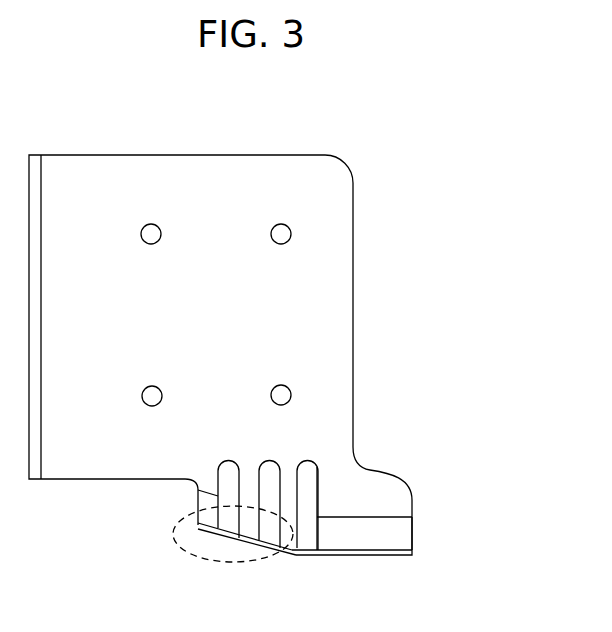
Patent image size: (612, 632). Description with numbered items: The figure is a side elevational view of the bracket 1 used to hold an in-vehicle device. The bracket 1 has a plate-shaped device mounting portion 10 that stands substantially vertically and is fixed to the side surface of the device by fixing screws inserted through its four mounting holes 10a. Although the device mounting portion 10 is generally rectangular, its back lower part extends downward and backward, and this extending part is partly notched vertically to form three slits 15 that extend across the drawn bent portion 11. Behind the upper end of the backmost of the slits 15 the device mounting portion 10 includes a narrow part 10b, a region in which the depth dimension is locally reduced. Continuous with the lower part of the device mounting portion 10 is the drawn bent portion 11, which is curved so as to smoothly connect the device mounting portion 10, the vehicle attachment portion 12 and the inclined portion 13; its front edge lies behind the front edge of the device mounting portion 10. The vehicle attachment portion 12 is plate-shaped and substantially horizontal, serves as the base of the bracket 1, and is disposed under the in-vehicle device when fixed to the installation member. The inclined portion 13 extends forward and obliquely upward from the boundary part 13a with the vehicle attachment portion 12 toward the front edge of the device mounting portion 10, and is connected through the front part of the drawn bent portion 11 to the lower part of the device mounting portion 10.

The bracket 1 is at (298, 153).
The device mounting portion 10 is at (215, 257).
The mounting holes 10a is at (157, 234).
The narrow part 10b is at (358, 478).
The drawn bent portion 11 is at (366, 534).
The vehicle attachment portion 12 is at (393, 548).
The inclined portion 13 is at (182, 553).
The boundary part 13a is at (282, 553).
The slits 15 is at (262, 470).